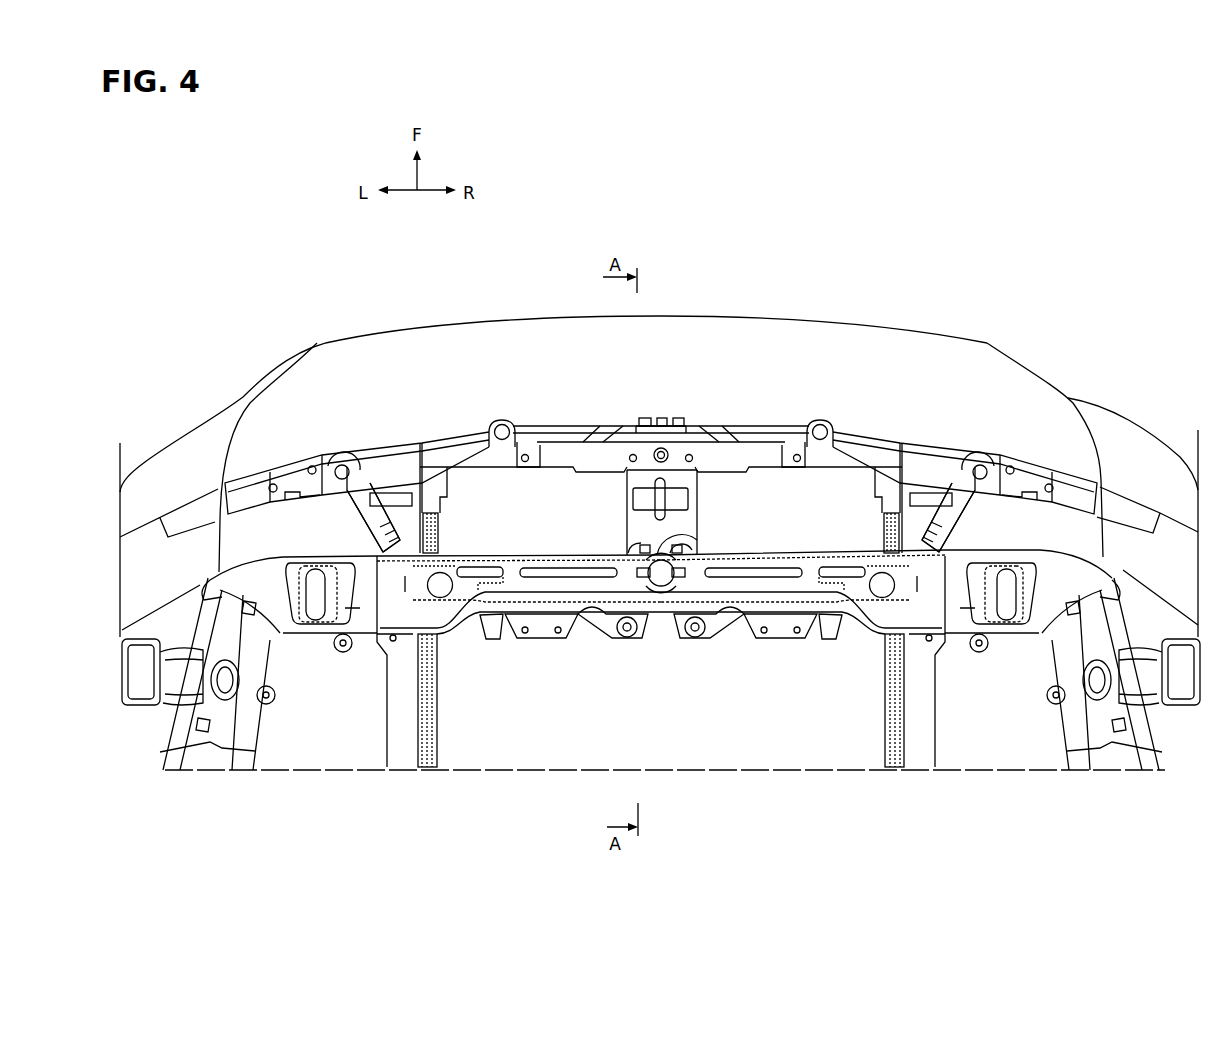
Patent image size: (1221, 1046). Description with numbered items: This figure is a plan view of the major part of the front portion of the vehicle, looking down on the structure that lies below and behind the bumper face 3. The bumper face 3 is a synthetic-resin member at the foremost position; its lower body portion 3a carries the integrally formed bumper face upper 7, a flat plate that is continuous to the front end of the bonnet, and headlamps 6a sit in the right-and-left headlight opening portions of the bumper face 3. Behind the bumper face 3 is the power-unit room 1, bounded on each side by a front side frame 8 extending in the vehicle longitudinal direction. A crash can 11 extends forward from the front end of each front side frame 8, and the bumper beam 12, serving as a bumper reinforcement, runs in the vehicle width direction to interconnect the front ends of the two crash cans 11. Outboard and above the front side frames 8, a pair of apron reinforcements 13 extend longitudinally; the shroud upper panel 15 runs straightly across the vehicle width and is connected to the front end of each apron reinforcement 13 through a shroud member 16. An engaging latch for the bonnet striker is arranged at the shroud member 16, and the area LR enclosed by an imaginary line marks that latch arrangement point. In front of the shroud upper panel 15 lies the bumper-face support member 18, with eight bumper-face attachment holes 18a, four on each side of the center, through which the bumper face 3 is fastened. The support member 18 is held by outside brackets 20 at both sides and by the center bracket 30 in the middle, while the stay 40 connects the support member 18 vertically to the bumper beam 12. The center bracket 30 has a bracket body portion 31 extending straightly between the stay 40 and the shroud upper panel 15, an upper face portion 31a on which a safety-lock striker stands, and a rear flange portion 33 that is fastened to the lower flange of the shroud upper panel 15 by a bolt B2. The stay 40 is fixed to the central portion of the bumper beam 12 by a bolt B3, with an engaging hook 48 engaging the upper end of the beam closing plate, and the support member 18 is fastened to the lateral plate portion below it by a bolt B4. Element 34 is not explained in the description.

The power-unit room 1 is at (661, 706).
The bumper face 3 is at (930, 328).
The body portion 3a is at (1135, 422).
The headlamp 6a is at (1032, 357).
The bumper face upper 7 is at (812, 322).
The front side frame 8 is at (885, 733).
The crash can 11 is at (880, 540).
The bumper beam 12 is at (557, 422).
The apron reinforcement 13 is at (1062, 747).
The shroud upper panel 15 is at (735, 625).
The shroud member 16 is at (1012, 647).
The bumper-face support member 18 is at (473, 438).
The bumper-face attachment hole 18a is at (1048, 484).
The outside bracket 20 is at (968, 530).
The center bracket 30 is at (626, 538).
The bracket body portion 31 is at (626, 500).
The upper face portion 31a is at (690, 494).
The rear flange portion 33 is at (698, 546).
The slot 34 is at (667, 510).
The stay 40 is at (705, 438).
The engaging hook 48 is at (672, 418).
The bolt B2 is at (697, 614).
The bolt B3 is at (678, 418).
The bolt B4 is at (661, 418).
The latch arrangement area LR is at (963, 608).